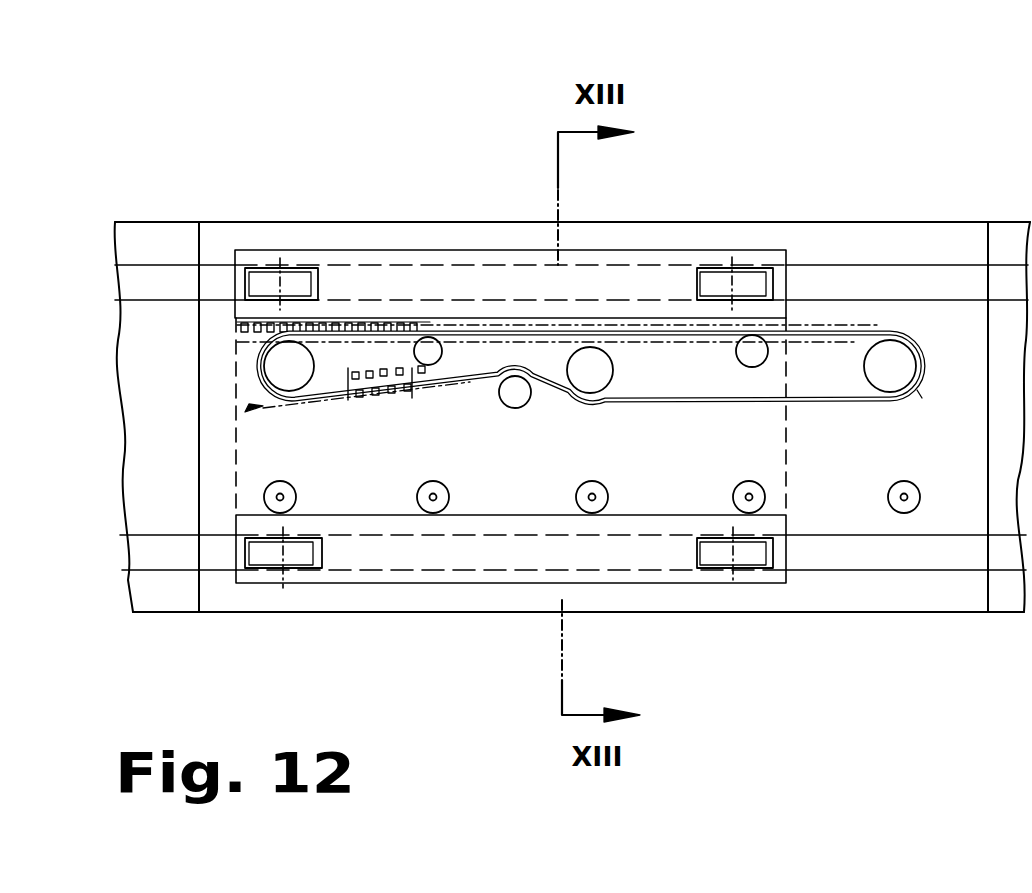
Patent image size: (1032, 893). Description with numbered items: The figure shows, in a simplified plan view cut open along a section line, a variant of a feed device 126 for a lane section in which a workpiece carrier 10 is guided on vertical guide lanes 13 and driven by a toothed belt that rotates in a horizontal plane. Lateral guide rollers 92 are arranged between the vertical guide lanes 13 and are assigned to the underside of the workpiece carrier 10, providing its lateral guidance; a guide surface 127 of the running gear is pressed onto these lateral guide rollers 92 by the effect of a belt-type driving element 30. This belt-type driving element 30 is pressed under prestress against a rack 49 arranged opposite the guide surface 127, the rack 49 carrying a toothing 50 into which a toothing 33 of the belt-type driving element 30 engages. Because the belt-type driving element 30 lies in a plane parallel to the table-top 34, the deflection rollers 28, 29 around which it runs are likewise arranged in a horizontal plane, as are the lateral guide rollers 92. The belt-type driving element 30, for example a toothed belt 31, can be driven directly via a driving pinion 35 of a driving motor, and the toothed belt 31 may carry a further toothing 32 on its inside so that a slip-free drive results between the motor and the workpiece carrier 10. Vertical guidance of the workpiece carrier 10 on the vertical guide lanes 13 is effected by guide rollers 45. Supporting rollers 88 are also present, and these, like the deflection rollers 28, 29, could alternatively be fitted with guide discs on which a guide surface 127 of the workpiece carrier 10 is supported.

The workpiece carrier 10 is at (779, 577).
The vertical guide lanes 13 is at (873, 287).
The deflection roller 28 is at (903, 355).
The deflection roller 29 is at (277, 358).
The belt-type driving element 30 is at (811, 318).
The toothed belt 31 is at (917, 390).
The toothing 32 is at (378, 374).
The toothing 33 is at (396, 398).
The table-top 34 is at (212, 240).
The driving pinion 35 is at (592, 362).
The guide rollers 45 is at (253, 283).
The rack 49 is at (277, 244).
The toothing 50 is at (295, 320).
The supporting rollers 88 is at (428, 350).
The lateral guide rollers 92 is at (736, 490).
The feed device 126 is at (246, 410).
The guide surface 127 is at (478, 510).